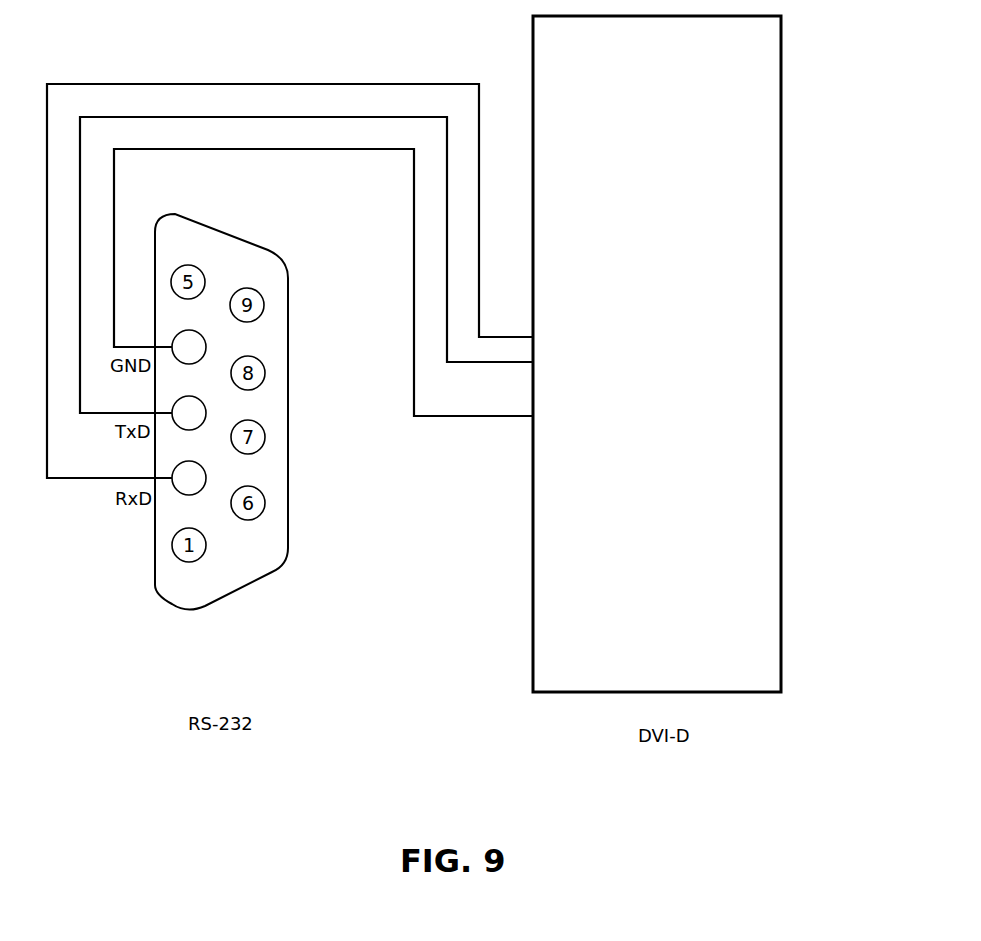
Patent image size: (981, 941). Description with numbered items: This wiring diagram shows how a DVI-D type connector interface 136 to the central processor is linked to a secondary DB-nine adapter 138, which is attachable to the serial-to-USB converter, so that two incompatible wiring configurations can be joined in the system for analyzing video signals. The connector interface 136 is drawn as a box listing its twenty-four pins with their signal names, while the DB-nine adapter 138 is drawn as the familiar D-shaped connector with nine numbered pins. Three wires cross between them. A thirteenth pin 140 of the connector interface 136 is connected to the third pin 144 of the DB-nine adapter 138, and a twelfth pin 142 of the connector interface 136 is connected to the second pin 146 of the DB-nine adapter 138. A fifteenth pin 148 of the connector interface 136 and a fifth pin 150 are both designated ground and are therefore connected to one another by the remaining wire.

The connector interface 136 is at (696, 354).
The secondary DB-9 adapter 138 is at (288, 540).
The thirteenth pin 140 is at (668, 367).
The twelfth pin 142 is at (667, 342).
The third pin 144 is at (206, 412).
The second pin 146 is at (206, 477).
The fifteenth pin 148 is at (643, 421).
The fifth pin 150 is at (206, 346).